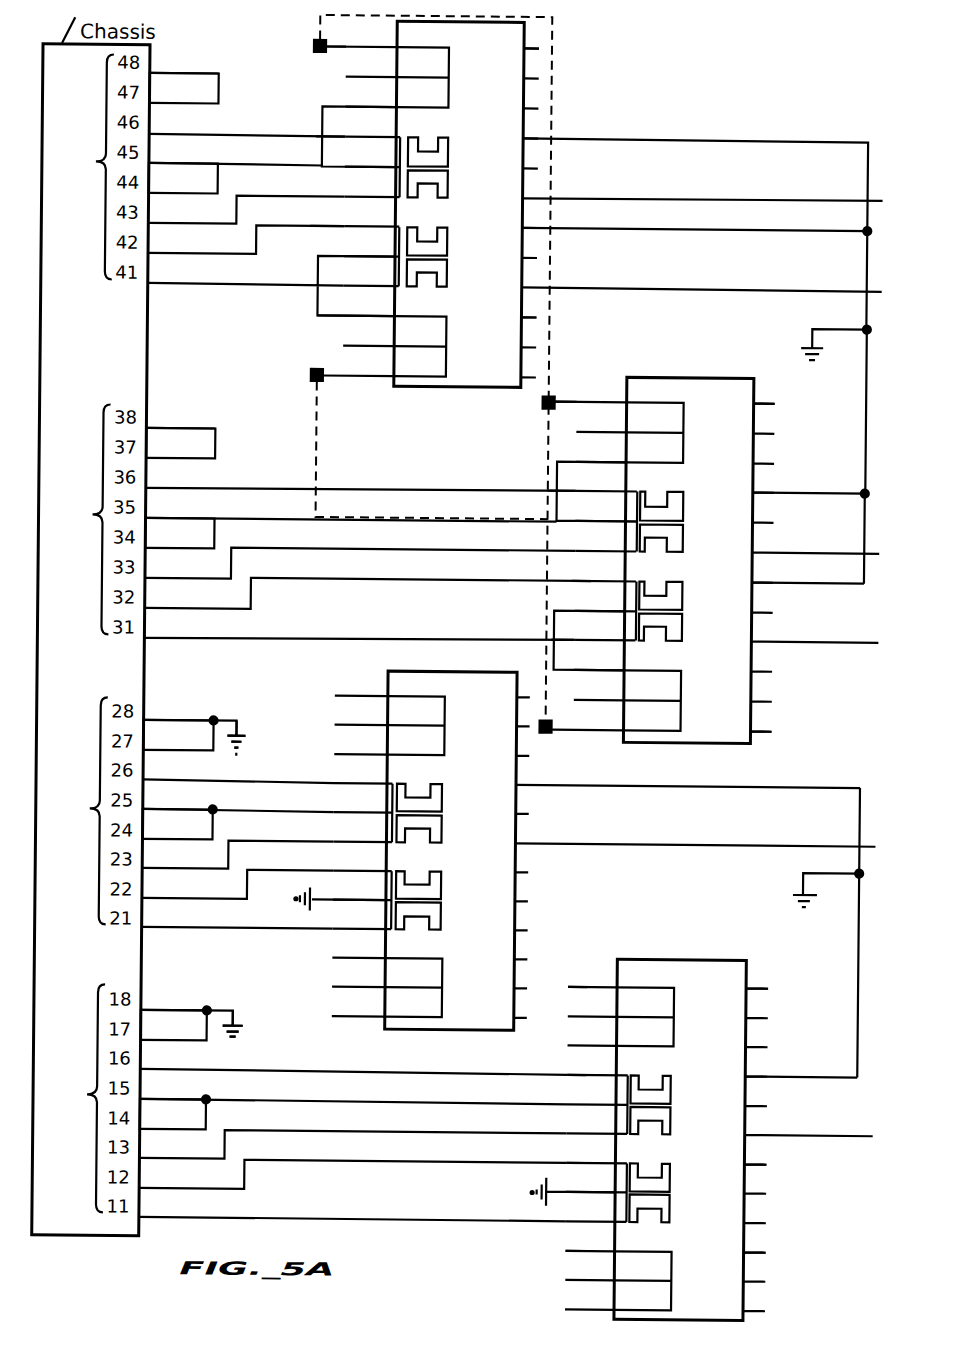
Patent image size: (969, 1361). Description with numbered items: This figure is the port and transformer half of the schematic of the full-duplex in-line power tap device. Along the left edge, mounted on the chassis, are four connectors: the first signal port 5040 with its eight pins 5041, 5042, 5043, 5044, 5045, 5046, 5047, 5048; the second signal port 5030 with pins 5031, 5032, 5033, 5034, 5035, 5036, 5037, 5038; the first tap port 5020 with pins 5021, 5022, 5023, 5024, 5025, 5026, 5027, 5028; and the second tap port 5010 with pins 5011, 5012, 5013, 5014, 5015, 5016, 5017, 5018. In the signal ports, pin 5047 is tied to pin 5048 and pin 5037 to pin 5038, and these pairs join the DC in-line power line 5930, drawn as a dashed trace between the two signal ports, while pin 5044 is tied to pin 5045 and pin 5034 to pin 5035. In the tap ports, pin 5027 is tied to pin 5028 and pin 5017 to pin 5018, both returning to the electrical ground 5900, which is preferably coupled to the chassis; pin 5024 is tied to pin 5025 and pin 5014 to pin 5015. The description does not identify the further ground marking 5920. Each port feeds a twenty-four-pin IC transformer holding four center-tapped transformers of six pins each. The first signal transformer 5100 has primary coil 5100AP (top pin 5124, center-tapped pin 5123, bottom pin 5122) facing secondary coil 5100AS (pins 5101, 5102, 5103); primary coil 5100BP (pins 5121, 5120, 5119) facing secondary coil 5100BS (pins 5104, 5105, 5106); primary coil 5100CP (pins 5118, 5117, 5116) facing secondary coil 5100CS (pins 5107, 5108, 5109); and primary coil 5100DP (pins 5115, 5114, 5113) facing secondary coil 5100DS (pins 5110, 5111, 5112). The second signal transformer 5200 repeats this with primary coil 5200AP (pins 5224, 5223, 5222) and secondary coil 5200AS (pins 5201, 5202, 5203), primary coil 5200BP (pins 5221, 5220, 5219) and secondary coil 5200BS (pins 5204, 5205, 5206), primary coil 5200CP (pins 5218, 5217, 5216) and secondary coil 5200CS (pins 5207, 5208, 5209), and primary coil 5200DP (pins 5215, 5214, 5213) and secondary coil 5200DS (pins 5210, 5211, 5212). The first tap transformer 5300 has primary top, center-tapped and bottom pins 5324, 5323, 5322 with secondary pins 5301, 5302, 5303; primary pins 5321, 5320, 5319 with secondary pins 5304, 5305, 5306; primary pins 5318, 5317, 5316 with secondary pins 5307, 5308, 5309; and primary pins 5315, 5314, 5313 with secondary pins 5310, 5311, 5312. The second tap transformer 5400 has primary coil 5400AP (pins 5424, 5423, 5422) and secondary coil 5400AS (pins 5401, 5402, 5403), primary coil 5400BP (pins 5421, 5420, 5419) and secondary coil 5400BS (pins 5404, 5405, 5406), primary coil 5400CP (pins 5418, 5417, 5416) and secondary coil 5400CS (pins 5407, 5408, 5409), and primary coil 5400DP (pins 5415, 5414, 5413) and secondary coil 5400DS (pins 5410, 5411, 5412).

The first signal port 5040 is at (144, 53).
The second signal port 5030 is at (144, 410).
The first tap port 5020 is at (144, 700).
The second tap port 5010 is at (144, 993).
The first signal port pin 48 5048 is at (184, 64).
The first signal port pin 47 5047 is at (183, 89).
The first signal port pin 46 5046 is at (247, 125).
The first signal port pin 45 5045 is at (273, 136).
The first signal port pin 44 5044 is at (183, 179).
The first signal port pin 43 5043 is at (246, 210).
The first signal port pin 42 5042 is at (246, 239).
The first signal port pin 41 5041 is at (271, 285).
The second signal port pin 38 5038 is at (180, 419).
The second signal port pin 37 5037 is at (180, 444).
The second signal port pin 36 5036 is at (361, 480).
The second signal port pin 35 5035 is at (392, 491).
The second signal port pin 34 5034 is at (179, 534).
The second signal port pin 33 5033 is at (360, 565).
The second signal port pin 32 5032 is at (360, 595).
The second signal port pin 31 5031 is at (384, 639).
The first tap port pin 28 5028 is at (194, 728).
The first tap port pin 27 5027 is at (178, 736).
The first tap port pin 26 5026 is at (238, 771).
The first tap port pin 25 5025 is at (238, 802).
The first tap port pin 24 5024 is at (177, 825).
The first tap port pin 23 5023 is at (237, 855).
The first tap port pin 22 5022 is at (237, 885).
The first tap port pin 21 5021 is at (237, 918).
The second tap port pin 18 5018 is at (192, 1013).
The second tap port pin 17 5017 is at (174, 1026).
The second tap port pin 16 5016 is at (353, 1062).
The second tap port pin 15 5015 is at (353, 1093).
The second tap port pin 14 5014 is at (173, 1115).
The second tap port pin 13 5013 is at (352, 1146).
The second tap port pin 12 5012 is at (352, 1176).
The second tap port pin 11 5011 is at (352, 1209).
The transformer TR1 5100 is at (457, 389).
The transformer TR2 5200 is at (711, 376).
The transformer TR4 5300 is at (408, 671).
The transformer TR3 5400 is at (695, 958).
The TR1 pin 1 5101 is at (506, 39).
The TR1 pin 2 5102 is at (506, 69).
The TR1 pin 3 5103 is at (506, 99).
The TR1 pin 4 5104 is at (505, 129).
The TR1 pin 5 5105 is at (505, 159).
The TR1 pin 6 5106 is at (677, 190).
The TR1 pin 7 5107 is at (504, 218).
The TR1 pin 8 5108 is at (504, 248).
The TR1 pin 9 5109 is at (676, 279).
The TR1 pin 10 5110 is at (504, 308).
The TR1 pin 11 5111 is at (503, 338).
The TR1 pin 12 5112 is at (503, 368).
The TR1 pin 13 5113 is at (358, 366).
The TR1 pin 14 5114 is at (368, 336).
The TR1 pin 15 5115 is at (368, 306).
The TR1 pin 16 5116 is at (371, 277).
The TR1 pin 17 5117 is at (371, 247).
The TR1 pin 18 5118 is at (371, 217).
The TR1 pin 19 5119 is at (372, 188).
The TR1 pin 20 5120 is at (372, 158).
The TR1 pin 21 5121 is at (372, 128).
The TR1 pin 22 5122 is at (370, 97).
The TR1 pin 23 5123 is at (371, 67).
The TR1 pin 24 5124 is at (361, 38).
The TR2 pin 1 5201 is at (740, 394).
The TR2 pin 2 5202 is at (740, 424).
The TR2 pin 3 5203 is at (739, 454).
The TR2 pin 4 5204 is at (739, 483).
The TR2 pin 5 5205 is at (739, 513).
The TR2 pin 6 5206 is at (791, 543).
The TR2 pin 7 5207 is at (738, 573).
The TR2 pin 8 5208 is at (738, 603).
The TR2 pin 9 5209 is at (791, 632).
The TR2 pin 10 5210 is at (737, 662).
The TR2 pin 11 5211 is at (737, 692).
The TR2 pin 12 5212 is at (737, 722).
The TR2 pin 13 5213 is at (588, 721).
The TR2 pin 14 5214 is at (598, 690).
The TR2 pin 15 5215 is at (598, 660).
The TR2 pin 16 5216 is at (605, 631).
The TR2 pin 17 5217 is at (605, 602).
The TR2 pin 18 5218 is at (605, 572).
The TR2 pin 19 5219 is at (605, 542).
The TR2 pin 20 5220 is at (606, 512).
The TR2 pin 21 5221 is at (606, 482).
The TR2 pin 22 5222 is at (600, 452).
The TR2 pin 23 5223 is at (601, 422).
The TR2 pin 24 5224 is at (591, 393).
The TR4 pin 1 5301 is at (497, 688).
The TR4 pin 2 5302 is at (497, 717).
The TR4 pin 3 5303 is at (496, 746).
The TR4 pin 4 5304 is at (662, 776).
The TR4 pin 5 5305 is at (496, 804).
The TR4 pin 6 5306 is at (670, 835).
The TR4 pin 7 5307 is at (495, 863).
The TR4 pin 8 5308 is at (495, 892).
The TR4 pin 9 5309 is at (495, 921).
The TR4 pin 10 5310 is at (495, 950).
The TR4 pin 11 5311 is at (494, 979).
The TR4 pin 12 5312 is at (494, 1008).
The TR4 pin 13 5313 is at (358, 1007).
The TR4 pin 14 5314 is at (358, 978).
The TR4 pin 15 5315 is at (358, 949).
The TR4 pin 16 5316 is at (362, 920).
The TR4 pin 17 5317 is at (362, 891).
The TR4 pin 18 5318 is at (362, 862).
The TR4 pin 19 5319 is at (362, 833).
The TR4 pin 20 5320 is at (363, 803).
The TR4 pin 21 5321 is at (363, 774).
The TR4 pin 22 5322 is at (360, 745).
The TR4 pin 23 5323 is at (361, 716).
The TR4 pin 24 5324 is at (361, 687).
The TR3 pin 1 5401 is at (732, 979).
The TR3 pin 2 5402 is at (732, 1009).
The TR3 pin 3 5403 is at (732, 1038).
The TR3 pin 4 5404 is at (776, 1067).
The TR3 pin 5 5405 is at (731, 1097).
The TR3 pin 6 5406 is at (784, 1126).
The TR3 pin 7 5407 is at (731, 1155).
The TR3 pin 8 5408 is at (730, 1184).
The TR3 pin 9 5409 is at (730, 1214).
The TR3 pin 10 5410 is at (730, 1243).
The TR3 pin 11 5411 is at (729, 1272).
The TR3 pin 12 5412 is at (729, 1302).
The TR3 pin 13 5413 is at (589, 1299).
The TR3 pin 14 5414 is at (589, 1270).
The TR3 pin 15 5415 is at (590, 1241).
The TR3 pin 16 5416 is at (596, 1212).
The TR3 pin 17 5417 is at (596, 1183).
The TR3 pin 18 5418 is at (596, 1154).
The TR3 pin 19 5419 is at (597, 1124).
The TR3 pin 20 5420 is at (597, 1095).
The TR3 pin 21 5421 is at (597, 1066).
The TR3 pin 22 5422 is at (592, 1035).
The TR3 pin 23 5423 is at (592, 1006).
The TR3 pin 24 5424 is at (592, 977).
The TR1 primary winding A 5100AP is at (334, 49).
The TR1 primary winding B 5100BP is at (311, 139).
The TR1 primary winding C 5100CP is at (306, 229).
The TR1 primary winding D 5100DP is at (315, 318).
The TR1 secondary winding A 5100AS is at (527, 47).
The TR1 secondary winding B 5100BS is at (528, 139).
The TR1 secondary winding C 5100CS is at (529, 228).
The TR1 secondary winding D 5100DS is at (530, 317).
The TR2 primary winding A 5200AP is at (569, 400).
The TR2 primary winding B 5200BP is at (546, 490).
The TR2 primary winding C 5200CP is at (571, 580).
The TR2 primary winding D 5200DP is at (551, 639).
The TR2 secondary winding A 5200AS is at (759, 405).
The TR2 secondary winding B 5200BS is at (761, 491).
The TR2 secondary winding C 5200CS is at (762, 580).
The TR2 secondary winding D 5200DS is at (760, 729).
The TR3 primary winding A 5400AP is at (651, 981).
The TR3 primary winding B 5400BP is at (652, 1078).
The TR3 primary winding C 5400CP is at (649, 1163).
The TR3 primary winding D 5400DP is at (632, 1254).
The TR3 secondary winding A 5400AS is at (761, 988).
The TR3 secondary winding B 5400BS is at (761, 1075).
The TR3 secondary winding C 5400CS is at (761, 1164).
The TR3 secondary winding D 5400DS is at (762, 1252).
The signal ground 5900 is at (800, 785).
The chassis ground 5920 is at (862, 325).
The shield boundary 5930 is at (314, 17).